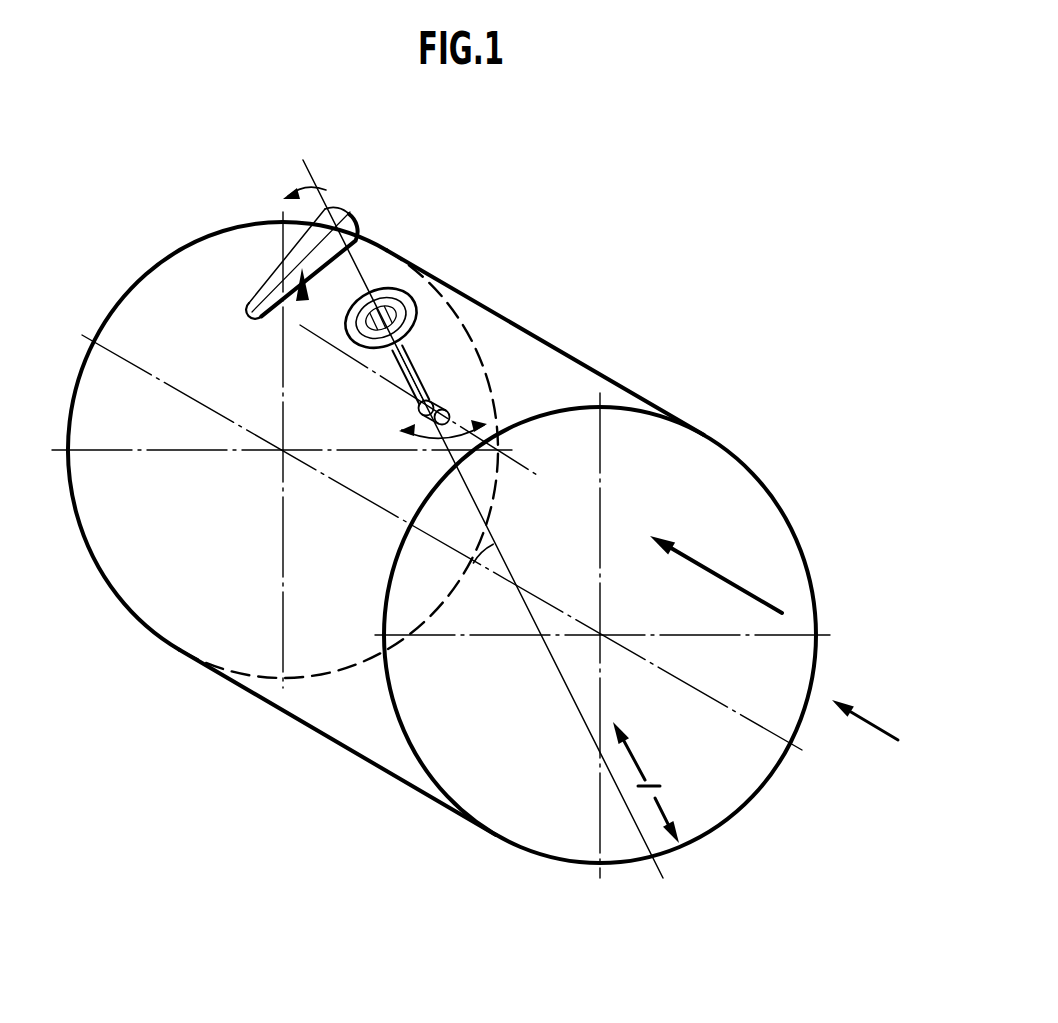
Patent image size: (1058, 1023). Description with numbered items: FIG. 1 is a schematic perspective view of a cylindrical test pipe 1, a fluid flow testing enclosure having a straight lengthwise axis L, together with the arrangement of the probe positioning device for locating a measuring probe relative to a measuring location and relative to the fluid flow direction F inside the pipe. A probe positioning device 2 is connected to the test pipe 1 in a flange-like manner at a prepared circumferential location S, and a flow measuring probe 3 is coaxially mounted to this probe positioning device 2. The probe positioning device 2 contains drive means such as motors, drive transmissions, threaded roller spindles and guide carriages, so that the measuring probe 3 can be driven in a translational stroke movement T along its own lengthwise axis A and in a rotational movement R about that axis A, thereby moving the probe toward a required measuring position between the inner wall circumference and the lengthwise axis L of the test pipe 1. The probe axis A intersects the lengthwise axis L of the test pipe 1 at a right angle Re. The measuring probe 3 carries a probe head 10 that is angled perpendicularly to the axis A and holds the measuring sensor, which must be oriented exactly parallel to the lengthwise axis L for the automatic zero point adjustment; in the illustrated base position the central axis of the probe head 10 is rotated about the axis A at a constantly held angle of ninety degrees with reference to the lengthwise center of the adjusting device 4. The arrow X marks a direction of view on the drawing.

The test pipe 1 is at (772, 801).
The probe positioning device 2 is at (340, 290).
The flow measuring probe 3 is at (418, 367).
The adjusting device 4 is at (303, 302).
The probe head 10 is at (438, 400).
The circumferential location S is at (412, 298).
The rotational movement R is at (330, 162).
The probe axis A is at (480, 507).
The lengthwise axis L is at (663, 668).
The right angle Re is at (493, 560).
The fluid flow direction F is at (733, 582).
The viewing direction X is at (887, 727).
The translational stroke movement T is at (634, 760).